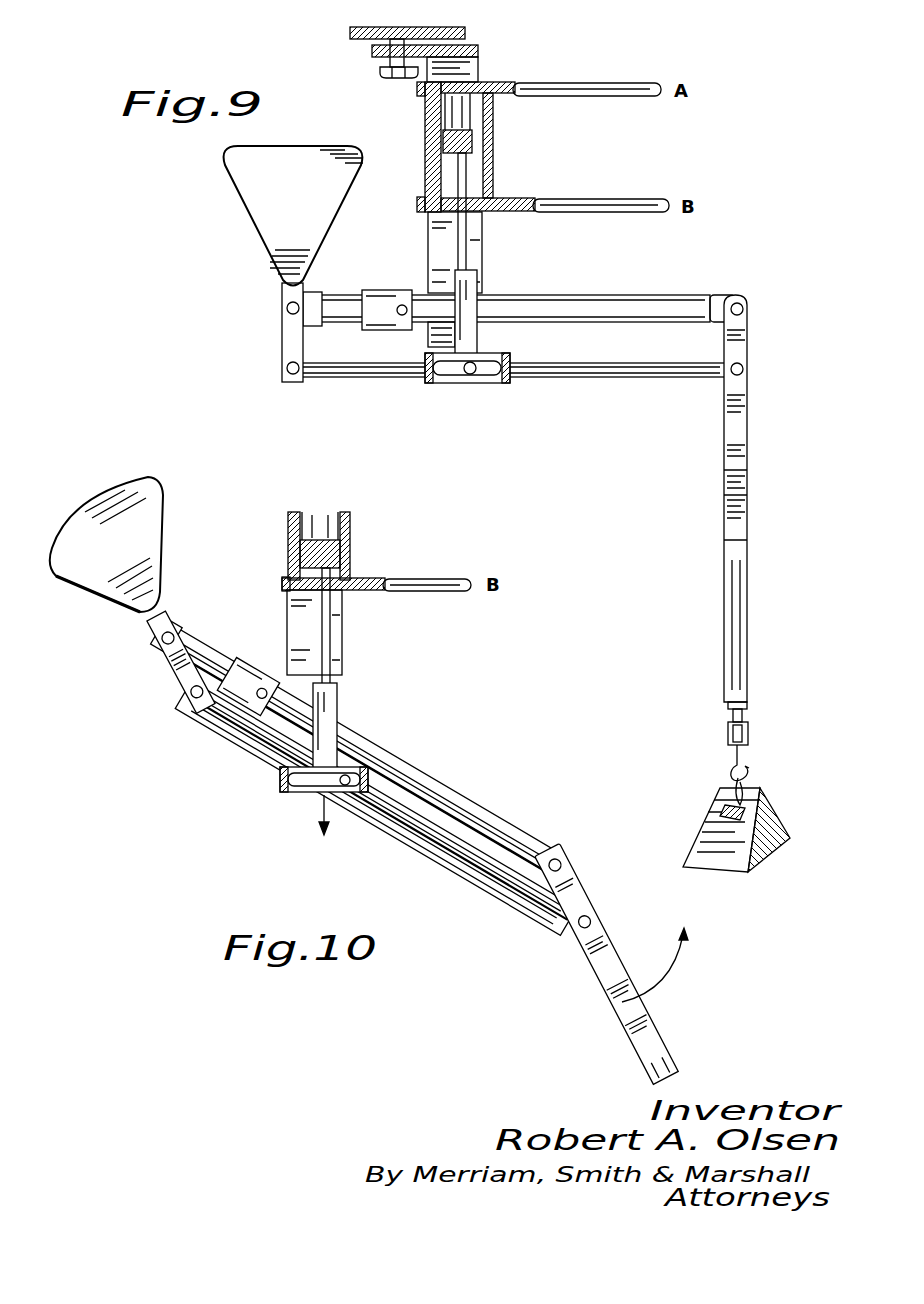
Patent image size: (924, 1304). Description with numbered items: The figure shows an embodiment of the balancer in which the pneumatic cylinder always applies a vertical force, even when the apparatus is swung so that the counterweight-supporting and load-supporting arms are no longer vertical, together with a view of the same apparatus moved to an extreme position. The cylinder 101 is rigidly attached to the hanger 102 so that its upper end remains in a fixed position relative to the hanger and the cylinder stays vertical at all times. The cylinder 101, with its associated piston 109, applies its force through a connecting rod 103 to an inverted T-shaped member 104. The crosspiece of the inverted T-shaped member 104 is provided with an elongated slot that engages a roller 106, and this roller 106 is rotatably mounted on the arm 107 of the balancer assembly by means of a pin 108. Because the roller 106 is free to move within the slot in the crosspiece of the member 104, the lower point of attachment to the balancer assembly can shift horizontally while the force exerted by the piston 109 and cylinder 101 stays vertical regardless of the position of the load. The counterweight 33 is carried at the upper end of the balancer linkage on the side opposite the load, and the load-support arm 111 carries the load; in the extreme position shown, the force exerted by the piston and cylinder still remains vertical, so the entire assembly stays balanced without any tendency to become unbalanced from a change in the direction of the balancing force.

In FIG. 9, the counterweight 33 is at (258, 218).
In FIG. 10, the counterweight 33 is at (124, 480).
In FIG. 9, the cylinder 101 is at (490, 160).
In FIG. 10, the cylinder 101 is at (352, 522).
In FIG. 9, the hanger 102 is at (484, 230).
In FIG. 10, the hanger 102 is at (344, 618).
In FIG. 9, the connecting rod 103 is at (466, 258).
In FIG. 10, the connecting rod 103 is at (332, 648).
In FIG. 9, the inverted T-shaped member 104 is at (498, 358).
In FIG. 10, the inverted T-shaped member 104 is at (368, 750).
In FIG. 9, the roller 106 is at (472, 374).
In FIG. 10, the roller 106 is at (347, 790).
In FIG. 9, the arm 107 is at (602, 376).
In FIG. 10, the arm 107 is at (462, 858).
In FIG. 9, the pin 108 is at (452, 374).
In FIG. 10, the pin 108 is at (320, 790).
In FIG. 9, the piston 109 is at (472, 144).
In FIG. 10, the piston 109 is at (335, 556).
In FIG. 9, the load-support arm 111 is at (748, 516).
In FIG. 10, the load-support arm 111 is at (605, 955).